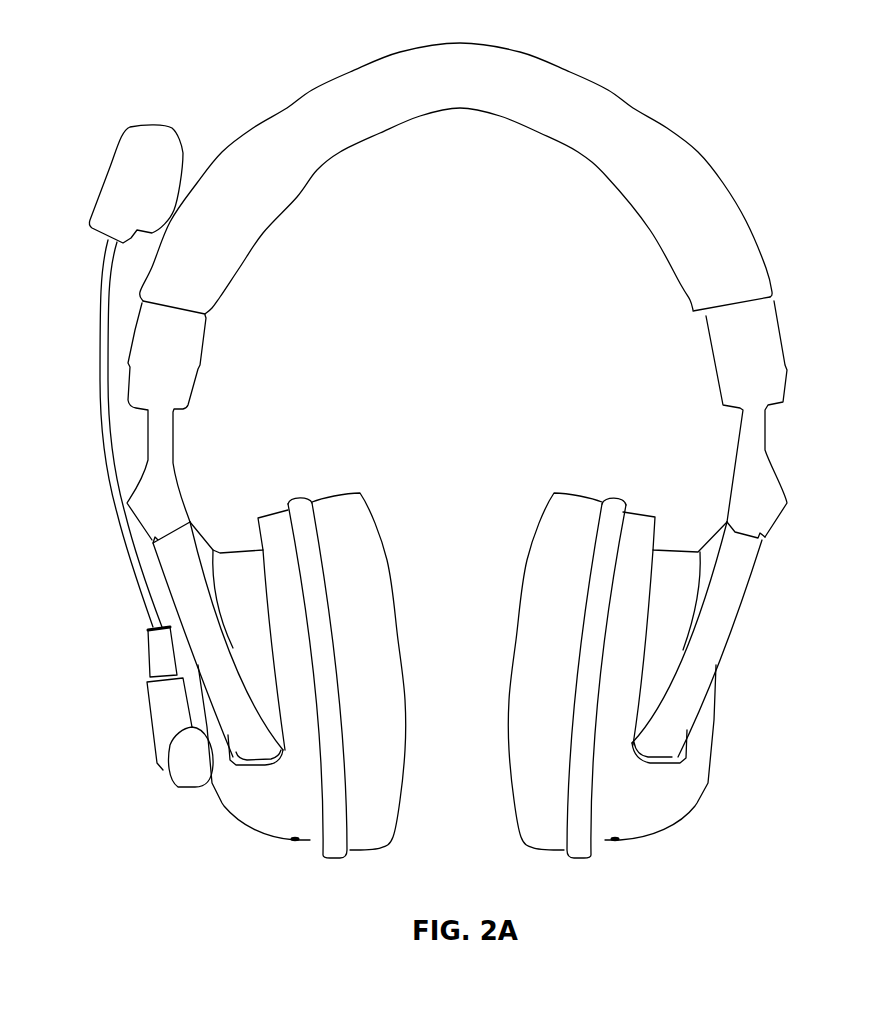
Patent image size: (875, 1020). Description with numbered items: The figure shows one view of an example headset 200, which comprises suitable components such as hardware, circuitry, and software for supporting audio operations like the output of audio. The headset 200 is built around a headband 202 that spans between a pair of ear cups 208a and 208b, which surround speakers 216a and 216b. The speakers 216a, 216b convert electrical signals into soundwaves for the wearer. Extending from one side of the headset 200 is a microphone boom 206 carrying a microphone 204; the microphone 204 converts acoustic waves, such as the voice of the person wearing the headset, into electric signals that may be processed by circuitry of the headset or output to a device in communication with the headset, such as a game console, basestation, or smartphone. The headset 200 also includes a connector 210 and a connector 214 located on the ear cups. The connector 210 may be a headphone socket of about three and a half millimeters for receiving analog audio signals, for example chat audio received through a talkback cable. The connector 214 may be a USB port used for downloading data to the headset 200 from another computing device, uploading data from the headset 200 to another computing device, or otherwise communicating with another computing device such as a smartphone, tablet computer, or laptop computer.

The headset 200 is at (228, 70).
The headband 202 is at (618, 92).
The microphone 204 is at (104, 176).
The microphone boom 206 is at (101, 405).
The ear cup 208a is at (368, 479).
The ear cup 208b is at (563, 495).
The connector 210 is at (292, 843).
The connector 214 is at (617, 843).
The speaker 216a is at (407, 637).
The speaker 216b is at (508, 600).